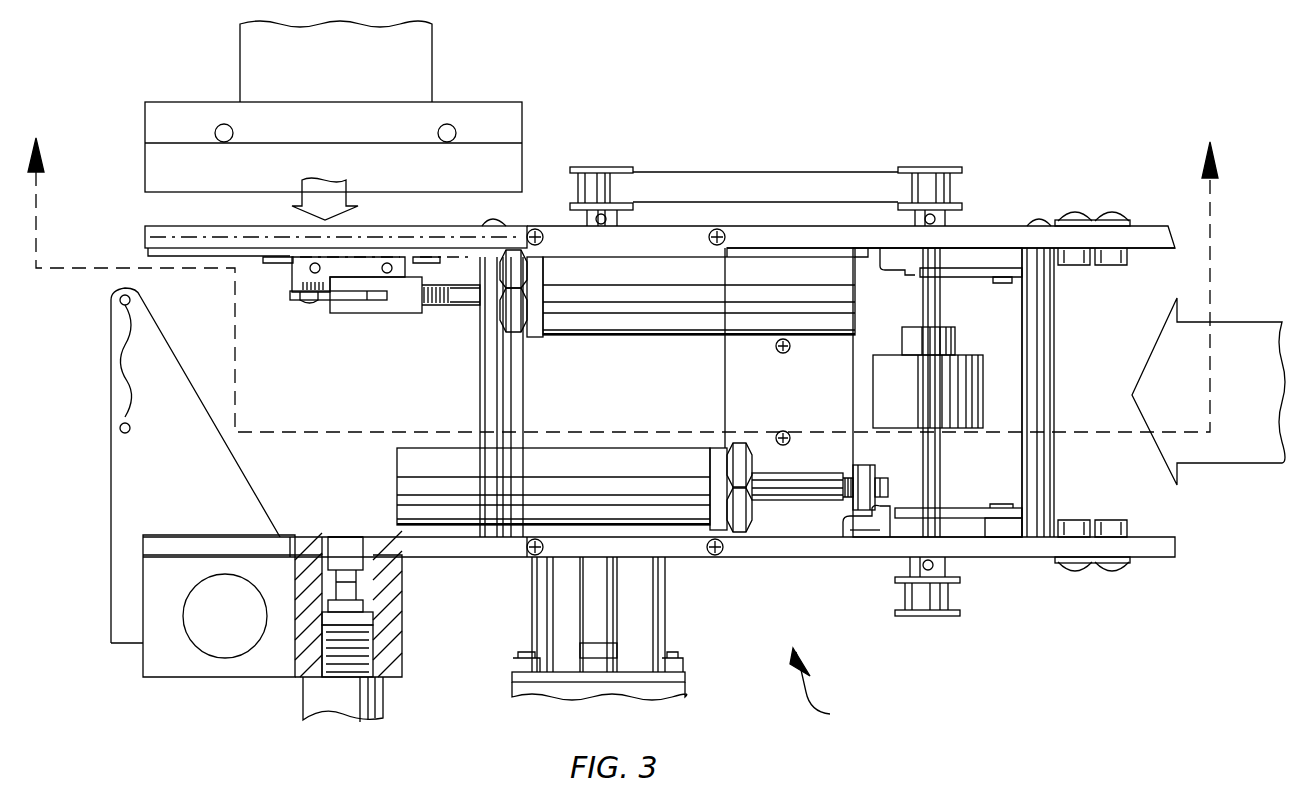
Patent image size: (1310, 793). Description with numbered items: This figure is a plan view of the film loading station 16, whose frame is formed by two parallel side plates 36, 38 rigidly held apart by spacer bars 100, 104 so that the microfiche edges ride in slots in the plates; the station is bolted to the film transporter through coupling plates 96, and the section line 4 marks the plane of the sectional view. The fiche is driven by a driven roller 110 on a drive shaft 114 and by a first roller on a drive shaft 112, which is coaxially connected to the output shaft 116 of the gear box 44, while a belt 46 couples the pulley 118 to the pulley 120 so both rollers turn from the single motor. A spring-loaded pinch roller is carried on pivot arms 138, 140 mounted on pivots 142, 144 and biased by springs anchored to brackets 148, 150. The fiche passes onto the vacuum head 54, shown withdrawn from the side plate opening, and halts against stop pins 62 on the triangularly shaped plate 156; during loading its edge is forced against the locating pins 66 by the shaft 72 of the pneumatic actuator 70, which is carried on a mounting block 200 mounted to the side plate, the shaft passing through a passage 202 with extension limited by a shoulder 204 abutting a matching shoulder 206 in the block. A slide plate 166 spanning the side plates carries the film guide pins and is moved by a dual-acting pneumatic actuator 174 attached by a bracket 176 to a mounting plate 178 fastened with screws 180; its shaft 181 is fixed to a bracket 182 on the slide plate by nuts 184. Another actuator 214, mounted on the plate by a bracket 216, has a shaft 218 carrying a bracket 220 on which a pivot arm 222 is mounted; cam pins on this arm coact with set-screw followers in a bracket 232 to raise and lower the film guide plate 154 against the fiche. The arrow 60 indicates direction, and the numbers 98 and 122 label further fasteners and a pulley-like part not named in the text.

The section line 4- 4 is at (623, 274).
The film loading station 16 is at (827, 687).
The side plate 36 is at (962, 558).
The side plate 38 is at (851, 218).
The gear box 44 is at (678, 688).
The belt 46 is at (764, 184).
The vacuum head 54 is at (154, 130).
The direction arrow 60 is at (1262, 404).
The stop pins 62 is at (124, 372).
The locating pins 66 is at (452, 130).
The pneumatic actuator 70 is at (384, 692).
The shaft 72 is at (378, 560).
The coupling plates 96 is at (1125, 224).
The bolt heads 98 is at (1084, 214).
The spacer bar 100 is at (1044, 305).
The spacer bar 104 is at (479, 390).
The driven roller 110 is at (1000, 342).
The drive shaft 112 is at (614, 596).
The drive shaft 114 is at (924, 312).
The output shaft 116 is at (612, 665).
The pulley 118 is at (582, 168).
The pulley 120 is at (912, 168).
The pulley 122 is at (922, 614).
The pivot arm 138 is at (948, 271).
The pivot arm 140 is at (947, 508).
The pivot 142 is at (998, 280).
The pivot 144 is at (1002, 504).
The bracket 148 is at (905, 282).
The bracket 150 is at (886, 510).
The plate 154 is at (158, 248).
The triangularly shaped plate 156 is at (124, 542).
The slide plate 166 is at (822, 396).
The dual-acting pneumatic actuator 174 is at (606, 448).
The bracket 176 is at (712, 446).
The mounting plate 178 is at (712, 372).
The screws 180 is at (532, 236).
The shaft 181 is at (796, 500).
The bracket 182 is at (850, 464).
The nuts 184 is at (848, 534).
The mounting block 200 is at (400, 658).
The passage 202 is at (338, 542).
The shoulder 204 is at (316, 544).
The shoulder 206 is at (394, 590).
The pneumatic actuator 214 is at (607, 320).
The bracket 216 is at (526, 322).
The shaft 218 is at (462, 300).
The bracket 220 is at (340, 298).
The pivot arm 222 is at (296, 298).
The bracket 232 is at (292, 280).